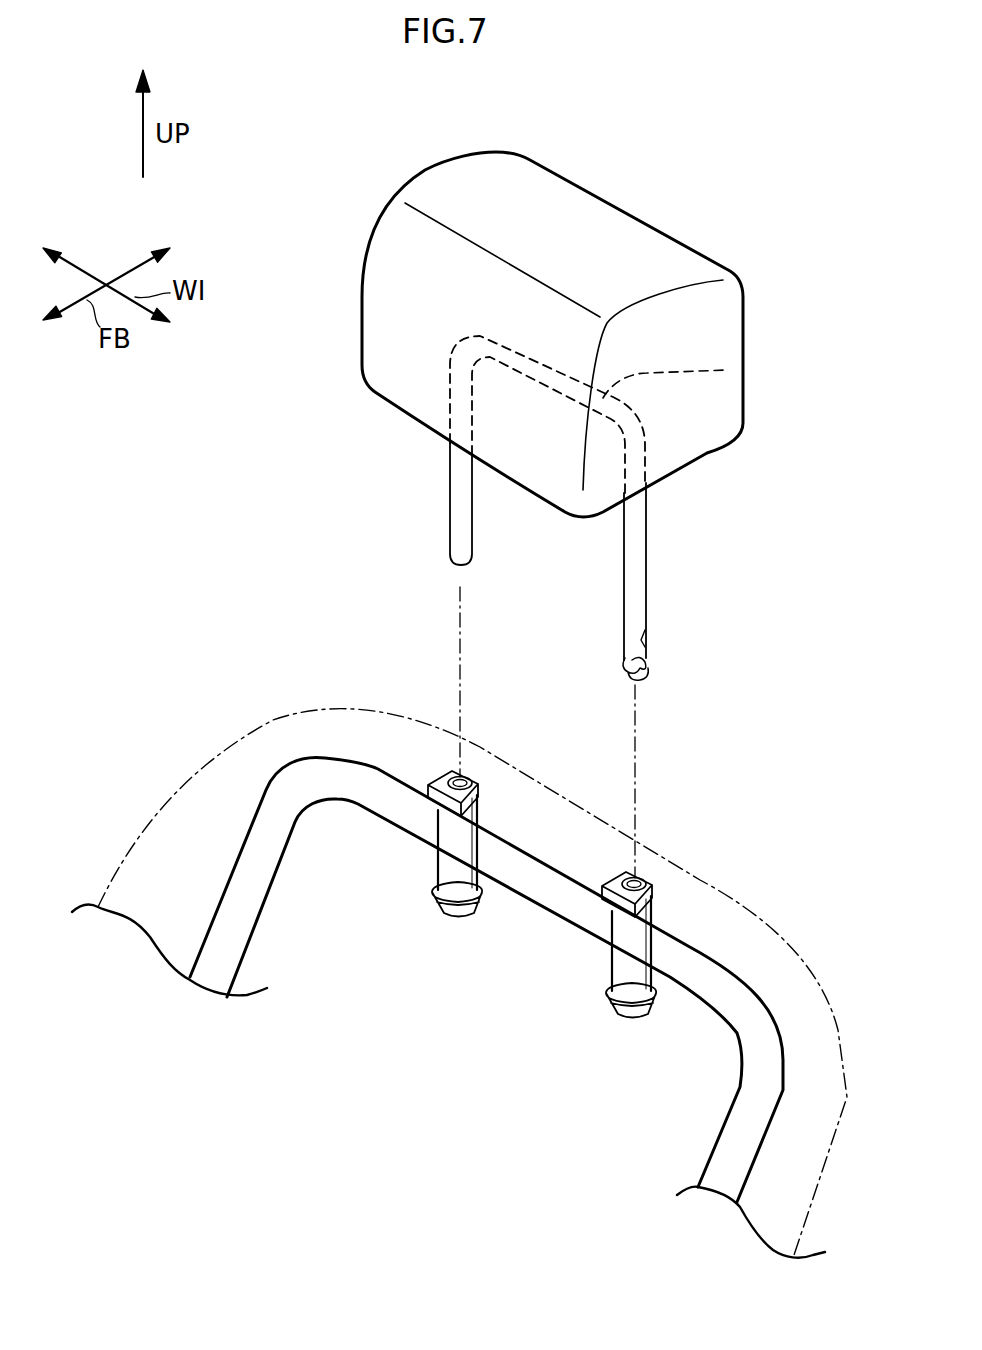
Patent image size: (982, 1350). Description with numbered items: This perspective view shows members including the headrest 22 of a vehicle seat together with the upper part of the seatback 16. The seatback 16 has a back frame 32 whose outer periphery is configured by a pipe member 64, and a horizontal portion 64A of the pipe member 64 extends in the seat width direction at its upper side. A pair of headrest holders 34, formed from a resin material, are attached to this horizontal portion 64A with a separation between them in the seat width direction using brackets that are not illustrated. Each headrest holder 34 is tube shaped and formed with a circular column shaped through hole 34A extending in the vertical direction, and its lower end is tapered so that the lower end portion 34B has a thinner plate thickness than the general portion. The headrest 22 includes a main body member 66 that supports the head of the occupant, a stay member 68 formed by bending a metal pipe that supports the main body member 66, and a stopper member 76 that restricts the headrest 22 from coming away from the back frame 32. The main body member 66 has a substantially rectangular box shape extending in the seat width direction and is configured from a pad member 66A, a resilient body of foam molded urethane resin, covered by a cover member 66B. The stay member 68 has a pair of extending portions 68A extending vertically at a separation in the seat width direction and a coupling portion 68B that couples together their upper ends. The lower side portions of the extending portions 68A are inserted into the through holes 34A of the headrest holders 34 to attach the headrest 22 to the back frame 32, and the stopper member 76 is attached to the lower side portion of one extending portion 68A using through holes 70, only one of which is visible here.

The headrest 22 is at (534, 307).
The main body member 66 is at (488, 324).
The pad member 66A is at (390, 247).
The cover member 66B is at (417, 173).
The stay member 68 is at (590, 539).
The extending portions 68A is at (450, 495).
The coupling portion 68B is at (727, 370).
The through holes 70 is at (645, 632).
The stopper member 76 is at (650, 685).
The seatback 16 is at (143, 830).
The back frame 32 is at (448, 994).
The pipe member 64 is at (463, 994).
The horizontal portion 64A is at (680, 948).
The headrest holders 34 is at (538, 891).
The through hole 34A is at (463, 777).
The lower end portion 34B is at (457, 923).